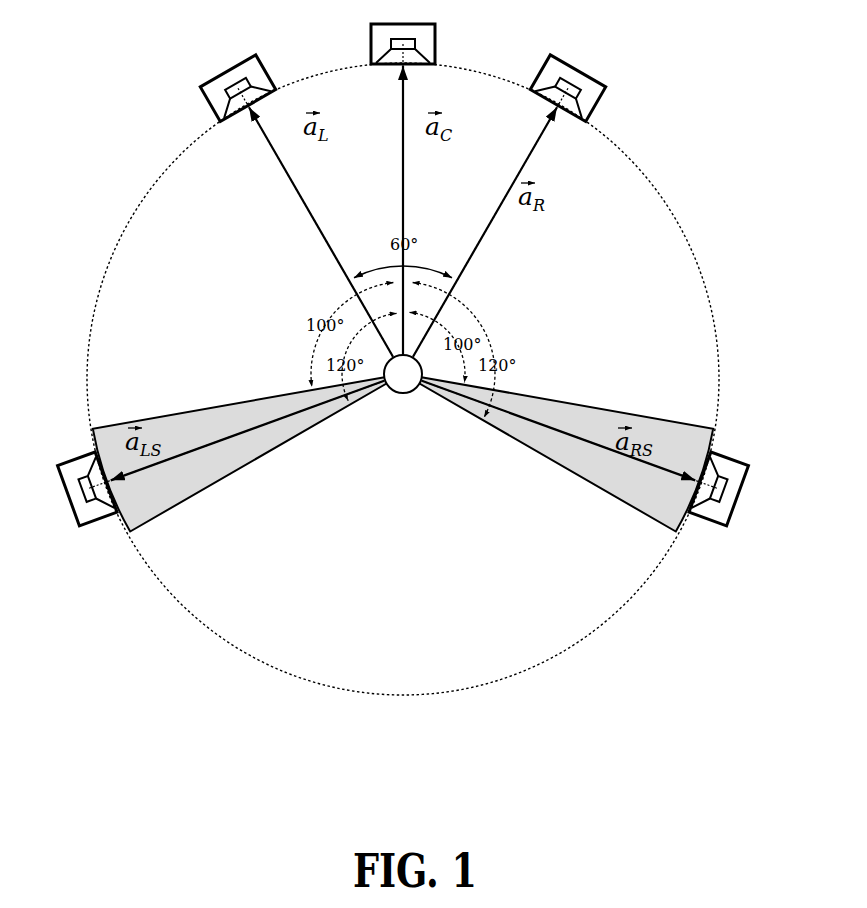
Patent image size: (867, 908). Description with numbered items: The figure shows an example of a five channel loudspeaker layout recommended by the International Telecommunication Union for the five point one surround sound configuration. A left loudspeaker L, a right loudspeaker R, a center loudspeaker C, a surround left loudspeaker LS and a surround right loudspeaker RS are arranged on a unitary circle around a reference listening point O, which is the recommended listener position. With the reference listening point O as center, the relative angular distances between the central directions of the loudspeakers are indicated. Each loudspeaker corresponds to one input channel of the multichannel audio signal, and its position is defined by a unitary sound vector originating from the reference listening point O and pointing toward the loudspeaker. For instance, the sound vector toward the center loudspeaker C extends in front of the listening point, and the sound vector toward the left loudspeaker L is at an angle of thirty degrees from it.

The reference listening point O is at (403, 374).
The center loudspeaker C is at (414, 44).
The left loudspeaker L is at (237, 84).
The right loudspeaker R is at (567, 84).
The surround left loudspeaker LS is at (75, 477).
The surround right loudspeaker RS is at (725, 477).